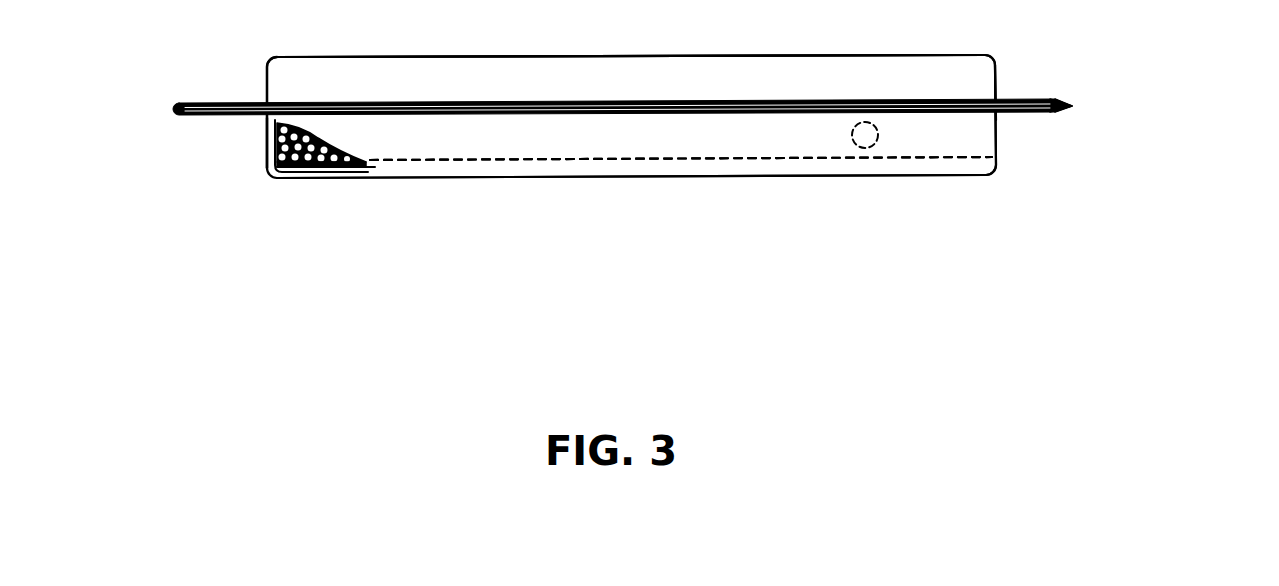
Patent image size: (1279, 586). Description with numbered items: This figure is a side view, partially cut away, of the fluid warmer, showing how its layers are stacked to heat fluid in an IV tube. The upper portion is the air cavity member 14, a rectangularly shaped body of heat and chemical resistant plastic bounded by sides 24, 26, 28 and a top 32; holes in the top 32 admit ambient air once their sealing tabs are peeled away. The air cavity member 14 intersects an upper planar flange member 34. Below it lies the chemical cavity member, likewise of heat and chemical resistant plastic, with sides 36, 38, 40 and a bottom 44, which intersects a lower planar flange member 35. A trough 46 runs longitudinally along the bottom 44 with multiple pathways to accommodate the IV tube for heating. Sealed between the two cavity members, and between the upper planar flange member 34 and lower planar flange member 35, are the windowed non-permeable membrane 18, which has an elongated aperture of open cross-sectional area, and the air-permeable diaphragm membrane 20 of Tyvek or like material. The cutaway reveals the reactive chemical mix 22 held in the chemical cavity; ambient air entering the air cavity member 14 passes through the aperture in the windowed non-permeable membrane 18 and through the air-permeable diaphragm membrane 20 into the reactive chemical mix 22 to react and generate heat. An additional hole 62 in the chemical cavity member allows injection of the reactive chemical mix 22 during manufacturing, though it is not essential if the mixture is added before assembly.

The air cavity member 14 is at (654, 99).
The windowed non-permeable membrane 18 is at (707, 86).
The air-permeable diaphragm membrane 20 is at (1148, 120).
The reactive chemical mix 22 is at (299, 174).
The side 24 is at (1064, 75).
The side 26 is at (630, 46).
The side 28 is at (231, 109).
The top 32 is at (631, 39).
The upper planar flange member 34 is at (1097, 81).
The lower planar flange member 35 is at (1101, 133).
The side 36 is at (1032, 117).
The side 38 is at (681, 182).
The side 40 is at (274, 146).
The bottom 44 is at (631, 201).
The trough 46 is at (655, 192).
The hole 62 is at (837, 169).